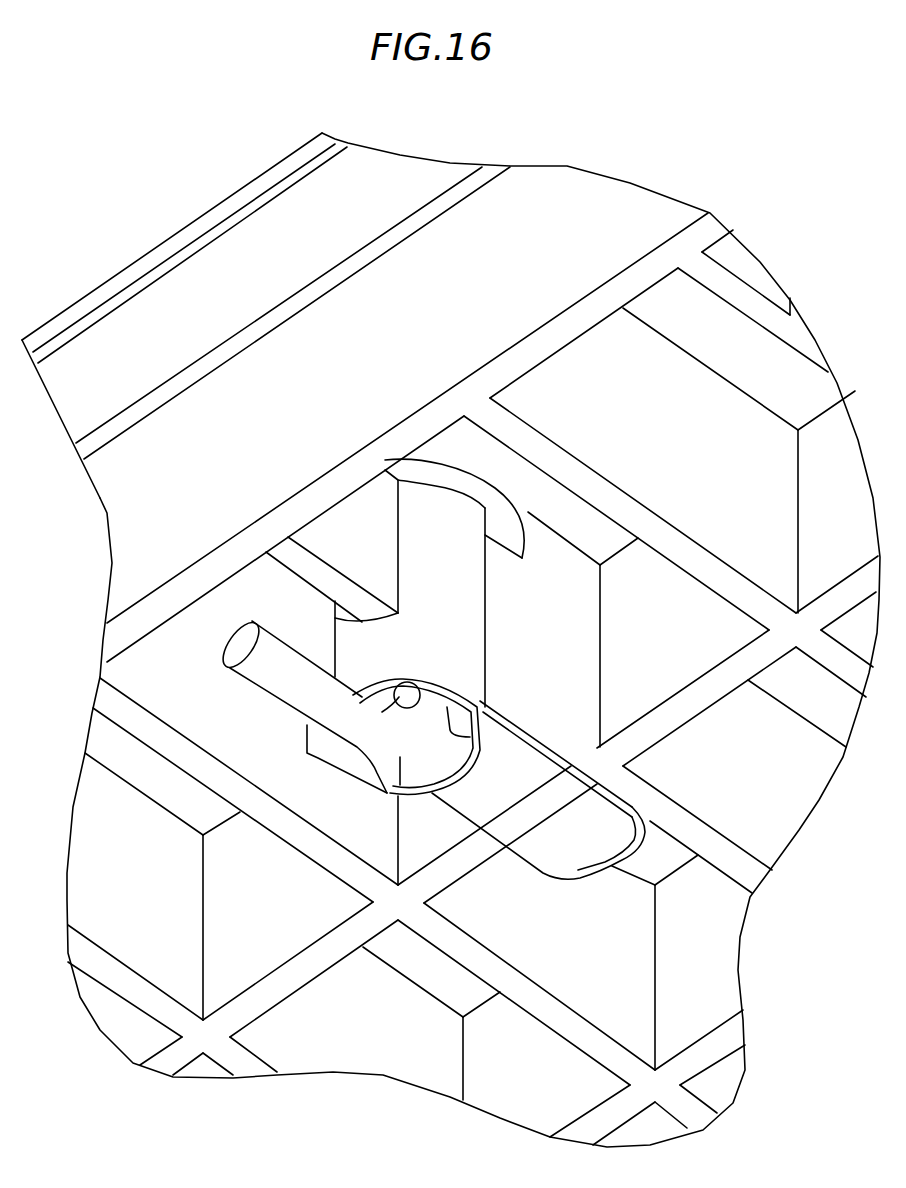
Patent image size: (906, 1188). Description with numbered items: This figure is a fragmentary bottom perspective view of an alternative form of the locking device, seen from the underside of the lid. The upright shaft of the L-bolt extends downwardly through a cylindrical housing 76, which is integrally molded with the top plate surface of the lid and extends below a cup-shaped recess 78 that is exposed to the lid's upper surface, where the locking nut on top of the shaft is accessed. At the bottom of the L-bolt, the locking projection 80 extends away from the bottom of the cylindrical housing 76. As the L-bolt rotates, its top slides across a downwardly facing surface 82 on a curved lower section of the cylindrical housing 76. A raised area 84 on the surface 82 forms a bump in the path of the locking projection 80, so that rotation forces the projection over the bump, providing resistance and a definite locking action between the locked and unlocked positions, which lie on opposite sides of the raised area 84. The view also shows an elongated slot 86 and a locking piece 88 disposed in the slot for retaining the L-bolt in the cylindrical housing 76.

The cylindrical housing 76 is at (445, 608).
The cup-shaped recess 78 is at (480, 453).
The locking projection 80 is at (277, 673).
The downwardly facing surface 82 is at (447, 737).
The raised area 84 is at (400, 696).
The elongated slot 86 is at (533, 667).
The locking piece 88 is at (540, 837).